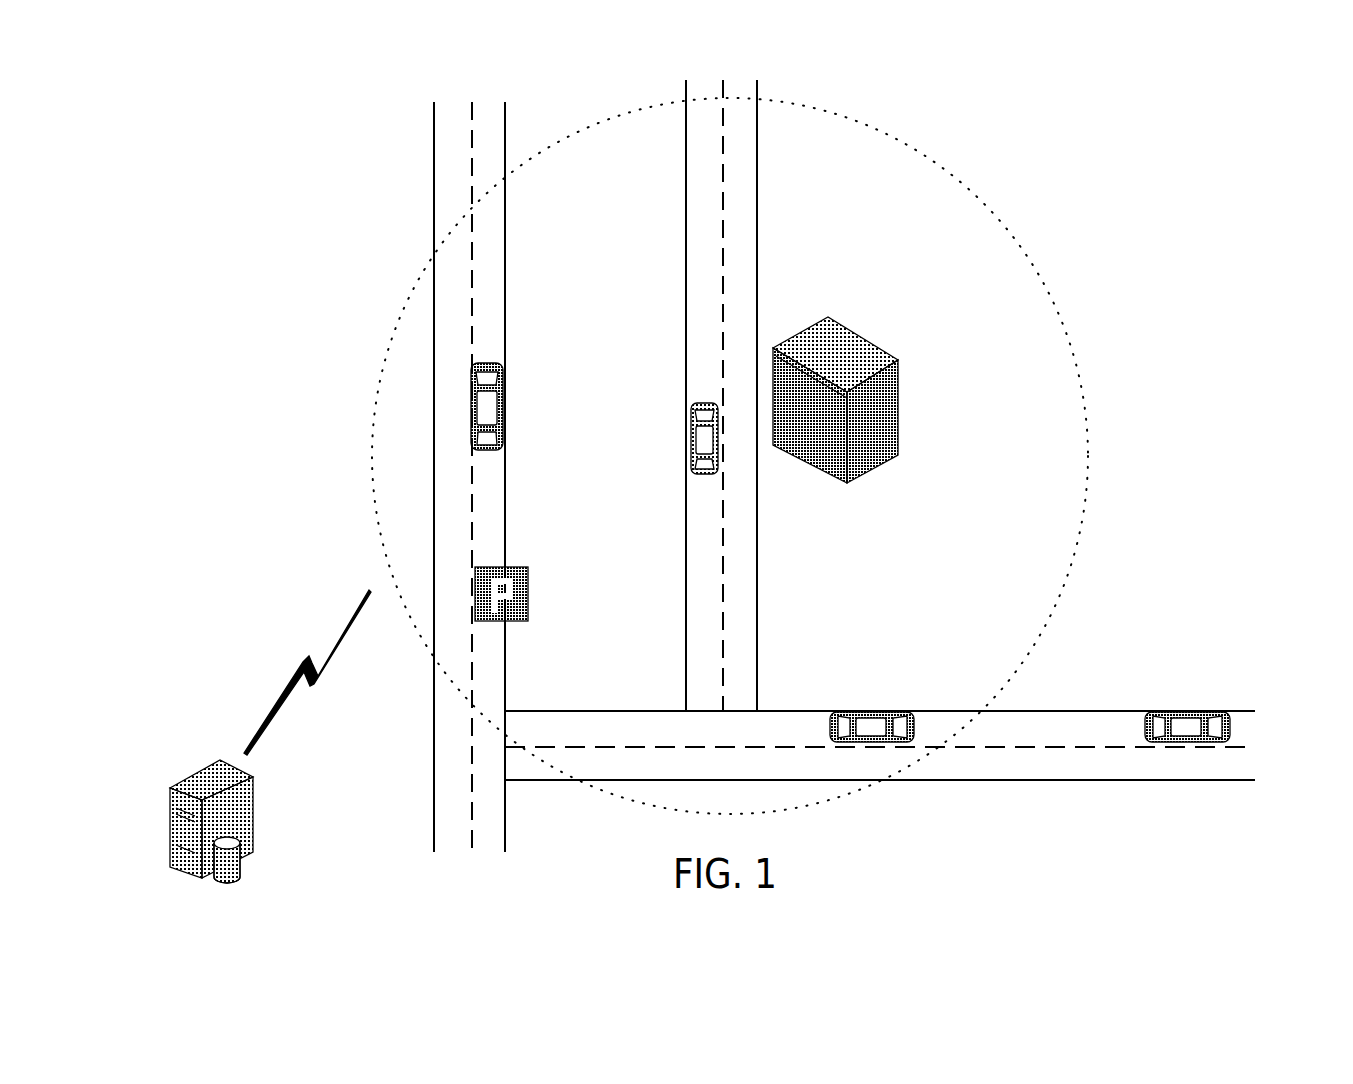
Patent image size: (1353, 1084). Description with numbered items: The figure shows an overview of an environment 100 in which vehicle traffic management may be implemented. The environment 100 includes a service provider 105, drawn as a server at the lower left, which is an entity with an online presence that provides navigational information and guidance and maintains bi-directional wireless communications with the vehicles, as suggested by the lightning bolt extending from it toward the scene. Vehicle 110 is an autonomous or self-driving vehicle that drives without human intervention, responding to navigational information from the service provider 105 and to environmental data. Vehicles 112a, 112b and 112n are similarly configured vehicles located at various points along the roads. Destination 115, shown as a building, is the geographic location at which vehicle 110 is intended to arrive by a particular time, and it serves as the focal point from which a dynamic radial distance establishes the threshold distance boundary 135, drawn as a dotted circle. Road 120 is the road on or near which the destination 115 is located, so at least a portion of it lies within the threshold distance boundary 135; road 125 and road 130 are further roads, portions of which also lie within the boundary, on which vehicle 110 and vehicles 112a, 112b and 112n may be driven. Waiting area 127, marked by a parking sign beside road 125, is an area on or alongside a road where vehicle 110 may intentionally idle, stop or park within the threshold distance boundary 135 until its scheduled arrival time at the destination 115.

The environment 100 is at (211, 107).
The service provider 105 is at (253, 797).
The vehicle 110 is at (692, 437).
The vehicle 112a is at (505, 397).
The vehicle 112b is at (888, 712).
The vehicle 112n is at (1210, 712).
The destination 115 is at (870, 342).
The road 120 is at (686, 197).
The road 125 is at (434, 177).
The waiting area 127 is at (528, 582).
The road 130 is at (1153, 780).
The threshold distance boundary 135 is at (924, 155).